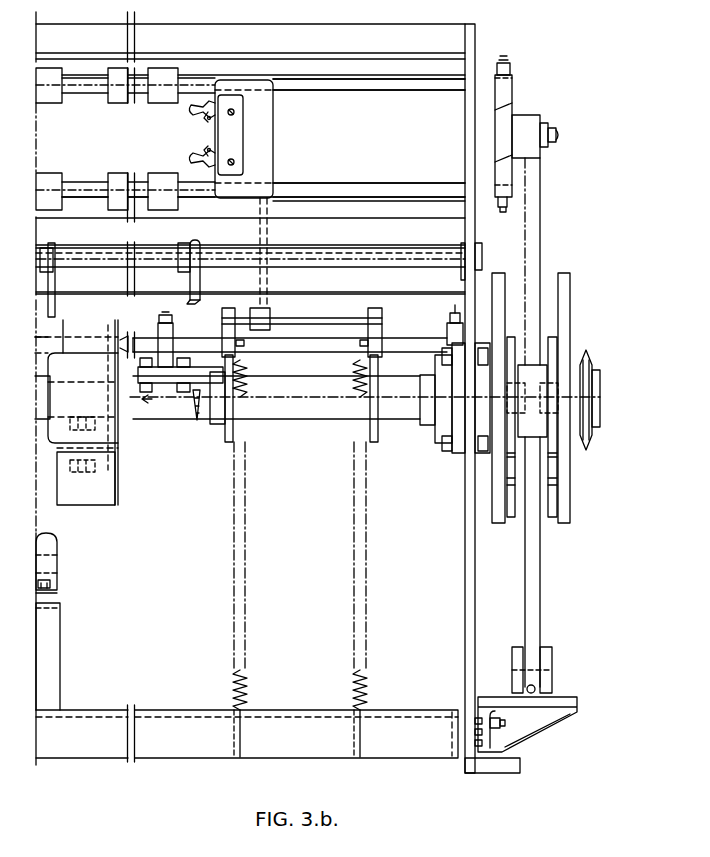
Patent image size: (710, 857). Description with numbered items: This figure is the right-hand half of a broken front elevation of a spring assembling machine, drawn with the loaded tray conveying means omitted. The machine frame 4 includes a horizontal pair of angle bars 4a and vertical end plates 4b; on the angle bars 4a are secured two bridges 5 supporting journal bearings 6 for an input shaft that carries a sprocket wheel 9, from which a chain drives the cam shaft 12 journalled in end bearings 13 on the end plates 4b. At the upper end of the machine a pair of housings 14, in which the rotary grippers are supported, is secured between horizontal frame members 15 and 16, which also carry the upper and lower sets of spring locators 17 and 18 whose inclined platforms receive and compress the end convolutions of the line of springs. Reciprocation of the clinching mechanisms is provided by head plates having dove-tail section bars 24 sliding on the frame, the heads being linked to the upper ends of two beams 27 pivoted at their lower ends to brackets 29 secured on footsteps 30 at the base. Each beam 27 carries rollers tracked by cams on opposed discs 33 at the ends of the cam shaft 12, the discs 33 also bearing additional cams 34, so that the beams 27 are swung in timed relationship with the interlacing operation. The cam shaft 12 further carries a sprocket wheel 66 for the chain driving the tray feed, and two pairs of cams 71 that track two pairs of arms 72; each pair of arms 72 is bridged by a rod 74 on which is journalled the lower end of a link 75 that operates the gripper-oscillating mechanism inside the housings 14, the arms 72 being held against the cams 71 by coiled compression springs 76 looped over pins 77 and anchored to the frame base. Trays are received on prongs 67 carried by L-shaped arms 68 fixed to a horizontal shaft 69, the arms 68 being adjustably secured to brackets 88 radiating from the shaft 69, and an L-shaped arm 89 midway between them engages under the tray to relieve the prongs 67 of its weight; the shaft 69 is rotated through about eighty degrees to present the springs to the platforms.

The machine frame 4 is at (422, 710).
The angle bars 4a is at (82, 734).
The vertical end plates 4b is at (468, 573).
The bridges 5 is at (52, 628).
The journal bearings 6 is at (53, 538).
The sprocket wheel 9 is at (200, 147).
The cam shaft 12 is at (365, 398).
The end bearings 13 is at (427, 428).
The housings 14 is at (244, 194).
The horizontal frame member 15 is at (355, 87).
The horizontal frame member 16 is at (353, 187).
The upper spring locators 17 is at (157, 95).
The lower spring locators 18 is at (163, 182).
The dove-tail section bars 24 is at (505, 133).
The beams 27 is at (533, 577).
The brackets 29 is at (513, 642).
The footsteps 30 is at (527, 724).
The discs 33 is at (563, 278).
The additional cams 34 is at (550, 502).
The sprocket wheel 66 is at (582, 448).
The prongs 67 is at (198, 243).
The L-shaped arms 68 is at (192, 298).
The horizontal shaft 69 is at (155, 261).
The cams 71 is at (225, 433).
The arms 72 is at (222, 333).
The rod 74 is at (320, 323).
The link 75 is at (270, 302).
The coiled compression springs 76 is at (242, 475).
The pins 77 is at (247, 343).
The bracket 88 is at (179, 248).
The L-shaped arm 89 is at (55, 303).